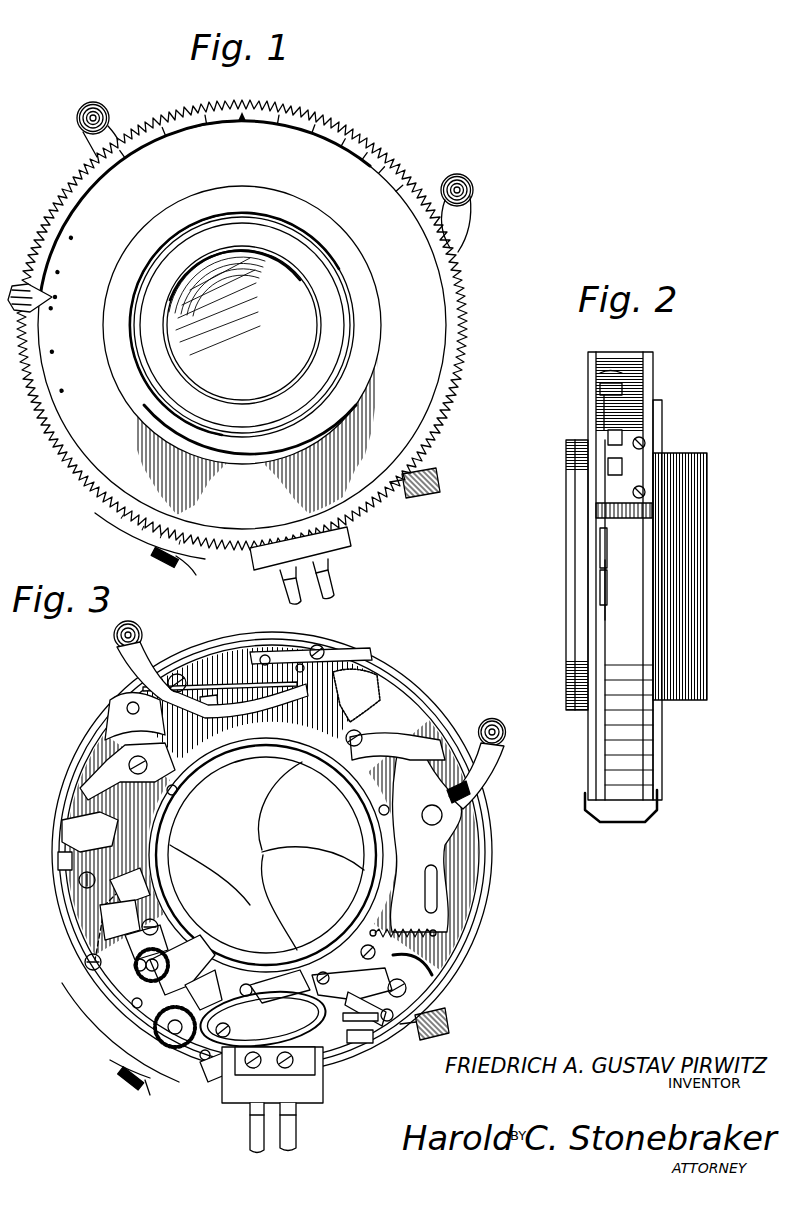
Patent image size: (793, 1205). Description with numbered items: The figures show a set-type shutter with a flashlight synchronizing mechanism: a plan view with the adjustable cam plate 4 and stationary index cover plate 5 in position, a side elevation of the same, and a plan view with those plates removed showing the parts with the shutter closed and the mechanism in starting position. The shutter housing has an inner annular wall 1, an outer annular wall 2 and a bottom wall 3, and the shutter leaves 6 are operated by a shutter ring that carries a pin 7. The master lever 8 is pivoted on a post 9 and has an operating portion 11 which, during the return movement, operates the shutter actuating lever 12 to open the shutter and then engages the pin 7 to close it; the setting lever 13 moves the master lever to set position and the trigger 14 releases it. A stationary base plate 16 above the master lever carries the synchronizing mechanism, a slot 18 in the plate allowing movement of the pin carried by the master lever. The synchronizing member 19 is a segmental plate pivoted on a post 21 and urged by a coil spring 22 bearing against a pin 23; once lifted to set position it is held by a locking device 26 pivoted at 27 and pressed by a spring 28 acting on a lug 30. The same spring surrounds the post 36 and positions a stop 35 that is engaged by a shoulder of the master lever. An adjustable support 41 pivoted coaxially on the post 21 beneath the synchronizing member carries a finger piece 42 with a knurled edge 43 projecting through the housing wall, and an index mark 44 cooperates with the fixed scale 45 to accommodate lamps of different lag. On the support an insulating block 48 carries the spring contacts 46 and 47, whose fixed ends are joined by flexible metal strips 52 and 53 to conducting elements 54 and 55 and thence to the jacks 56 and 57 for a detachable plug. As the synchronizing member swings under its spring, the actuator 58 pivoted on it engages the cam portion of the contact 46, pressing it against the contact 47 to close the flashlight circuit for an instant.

In FIG. 3, the inner annular wall 1 is at (372, 822).
In FIG. 2, the outer annular wall 2 is at (622, 641).
In FIG. 3, the outer annular wall 2 is at (428, 708).
In FIG. 3, the bottom wall 3 is at (458, 885).
In FIG. 1, the adjustable cam plate 4 is at (447, 275).
In FIG. 1, the stationary index cover plate 5 is at (428, 357).
In FIG. 3, the shutter leaves 6 is at (267, 856).
In FIG. 3, the pin 7 is at (178, 806).
In FIG. 3, the master lever 8 is at (420, 950).
In FIG. 3, the post 9 is at (436, 986).
In FIG. 3, the operating portion 11 is at (80, 828).
In FIG. 3, the shutter actuating lever 12 is at (115, 752).
In FIG. 1, the setting lever 13 is at (468, 200).
In FIG. 3, the setting lever 13 is at (496, 746).
In FIG. 1, the trigger 14 is at (80, 129).
In FIG. 3, the trigger 14 is at (124, 650).
In FIG. 3, the stationary base plate 16 is at (66, 886).
In FIG. 3, the slot 18 is at (194, 940).
In FIG. 3, the synchronizing member 19 is at (178, 1052).
In FIG. 3, the post 21 is at (208, 988).
In FIG. 3, the coil spring 22 is at (176, 988).
In FIG. 3, the pin 23 is at (112, 984).
In FIG. 3, the locking device 26 is at (132, 940).
In FIG. 3, the pivot 27 is at (142, 960).
In FIG. 3, the spring 28 is at (60, 858).
In FIG. 3, the lug 30 is at (116, 925).
In FIG. 3, the stop 35 is at (126, 890).
In FIG. 3, the post 36 is at (74, 914).
In FIG. 3, the adjustable support 41 is at (272, 985).
In FIG. 1, the extension or finger piece 42 is at (196, 575).
In FIG. 2, the extension or finger piece 42 is at (600, 544).
In FIG. 3, the extension or finger piece 42 is at (148, 1094).
In FIG. 1, the knurled edge 43 is at (171, 565).
In FIG. 2, the knurled edge 43 is at (602, 560).
In FIG. 3, the knurled edge 43 is at (125, 1080).
In FIG. 1, the index mark 44 is at (157, 551).
In FIG. 3, the index mark 44 is at (118, 1059).
In FIG. 1, the fixed scale 45 is at (122, 528).
In FIG. 2, the fixed scale 45 is at (606, 591).
In FIG. 3, the fixed scale 45 is at (105, 1022).
In FIG. 3, the spring contact 46 is at (206, 1060).
In FIG. 3, the spring contact 47 is at (212, 1085).
In FIG. 3, the insulating block 48 is at (240, 1016).
In FIG. 3, the flexible metal strip 52 is at (345, 1062).
In FIG. 3, the flexible metal strip 53 is at (318, 1078).
In FIG. 3, the conducting element 54 is at (300, 1100).
In FIG. 3, the conducting element 55 is at (300, 1088).
In FIG. 1, the jack 56 is at (308, 600).
In FIG. 2, the jack 56 is at (608, 466).
In FIG. 3, the jack 56 is at (260, 1152).
In FIG. 1, the jack 57 is at (345, 573).
In FIG. 2, the jack 57 is at (606, 438).
In FIG. 3, the jack 57 is at (290, 1150).
In FIG. 3, the actuator 58 is at (247, 984).